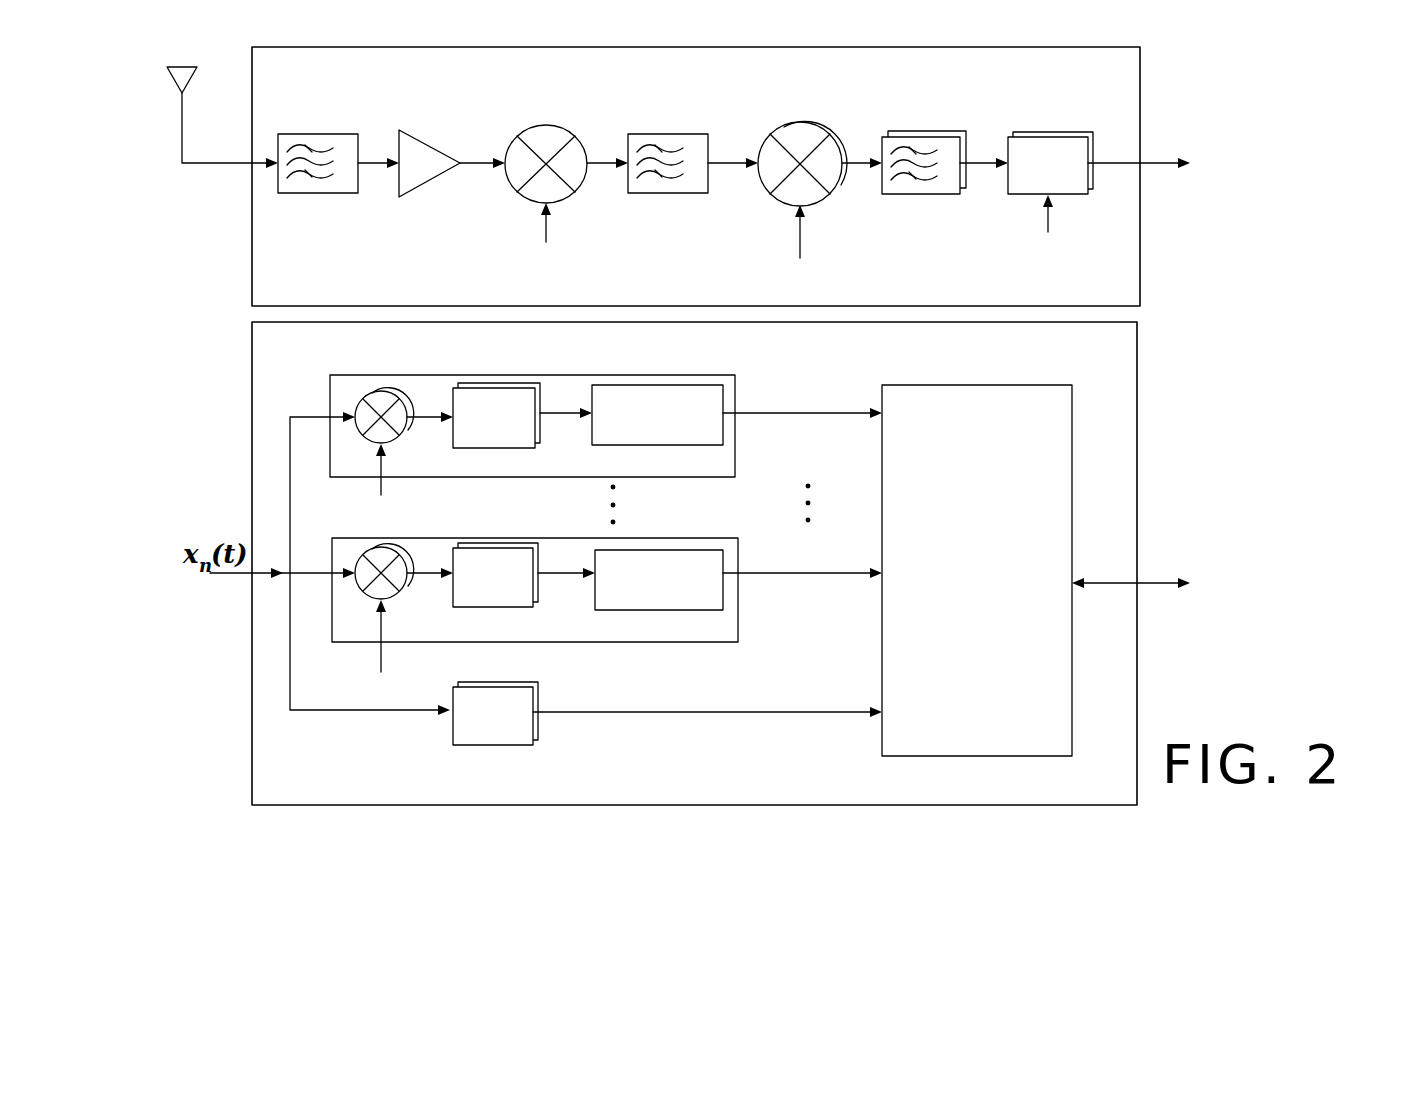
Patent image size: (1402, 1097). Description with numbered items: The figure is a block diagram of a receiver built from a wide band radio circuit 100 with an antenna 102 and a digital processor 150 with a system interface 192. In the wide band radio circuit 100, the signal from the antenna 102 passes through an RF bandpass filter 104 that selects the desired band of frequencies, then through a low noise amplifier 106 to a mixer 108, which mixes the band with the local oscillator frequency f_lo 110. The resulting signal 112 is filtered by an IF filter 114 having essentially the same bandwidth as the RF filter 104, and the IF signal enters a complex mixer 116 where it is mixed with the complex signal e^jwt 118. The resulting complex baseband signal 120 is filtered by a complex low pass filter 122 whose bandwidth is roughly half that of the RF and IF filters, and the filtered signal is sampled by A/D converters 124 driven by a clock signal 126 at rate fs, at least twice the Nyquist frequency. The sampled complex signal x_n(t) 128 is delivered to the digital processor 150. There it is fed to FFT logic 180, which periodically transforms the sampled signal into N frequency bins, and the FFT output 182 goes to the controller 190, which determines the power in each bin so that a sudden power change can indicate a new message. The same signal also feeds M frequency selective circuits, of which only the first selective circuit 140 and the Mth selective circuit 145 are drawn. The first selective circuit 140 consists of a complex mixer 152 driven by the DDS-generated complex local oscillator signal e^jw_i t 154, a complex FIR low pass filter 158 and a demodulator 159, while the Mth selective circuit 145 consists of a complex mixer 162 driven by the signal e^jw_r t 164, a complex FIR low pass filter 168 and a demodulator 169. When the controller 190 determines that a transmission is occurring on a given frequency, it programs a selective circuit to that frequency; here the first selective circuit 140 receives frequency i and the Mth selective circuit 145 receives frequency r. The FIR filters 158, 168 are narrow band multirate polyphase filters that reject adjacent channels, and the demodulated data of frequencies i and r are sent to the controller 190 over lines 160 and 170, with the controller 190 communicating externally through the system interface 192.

The wide band radio circuit 100 is at (1140, 100).
The antenna 102 is at (196, 70).
The RF bandpass filter 104 is at (320, 193).
The low noise amplifier 106 is at (418, 138).
The mixer 108 is at (568, 131).
The local oscillator frequency f_lo 110 is at (546, 236).
The resulting signal 112 is at (607, 168).
The IF filter 114 is at (677, 193).
The complex mixer 116 is at (770, 192).
The complex signal e^jwt 118 is at (800, 247).
The complex baseband signal 120 is at (858, 168).
The complex low pass filter 122 is at (930, 194).
The A/D converters 124 is at (1012, 194).
The clock signal 126 is at (1048, 226).
The sampled complex signal x_n(t) 128 is at (1160, 168).
The frequency selective circuit #1 140 is at (650, 375).
The frequency selective circuit #M 145 is at (648, 538).
The digital processor 150 is at (1137, 440).
The complex mixer 152 is at (400, 437).
The complex local oscillator signal e^jw_i t 154 is at (381, 487).
The complex FIR low pass filter 158 is at (535, 448).
The demodulator 159 is at (713, 446).
The line 160 is at (808, 416).
The complex mixer 162 is at (400, 592).
The complex local oscillator signal e^jw_r t 164 is at (381, 654).
The complex FIR low pass filter 168 is at (533, 607).
The demodulator 169 is at (705, 610).
The line 170 is at (808, 576).
The FFT logic 180 is at (500, 745).
The FFT output 182 is at (667, 714).
The controller 190 is at (882, 742).
The system interface 192 is at (1097, 583).